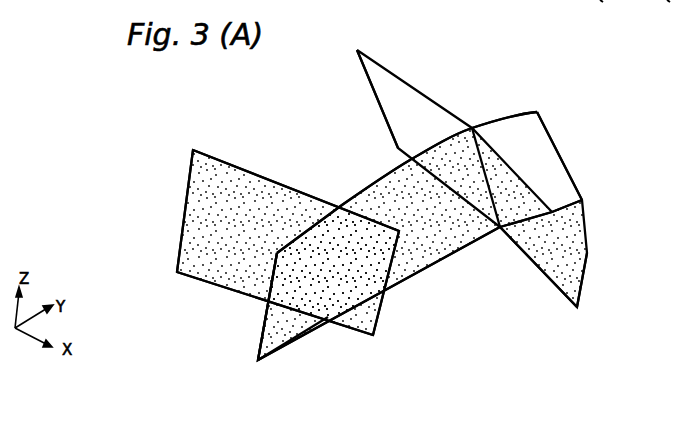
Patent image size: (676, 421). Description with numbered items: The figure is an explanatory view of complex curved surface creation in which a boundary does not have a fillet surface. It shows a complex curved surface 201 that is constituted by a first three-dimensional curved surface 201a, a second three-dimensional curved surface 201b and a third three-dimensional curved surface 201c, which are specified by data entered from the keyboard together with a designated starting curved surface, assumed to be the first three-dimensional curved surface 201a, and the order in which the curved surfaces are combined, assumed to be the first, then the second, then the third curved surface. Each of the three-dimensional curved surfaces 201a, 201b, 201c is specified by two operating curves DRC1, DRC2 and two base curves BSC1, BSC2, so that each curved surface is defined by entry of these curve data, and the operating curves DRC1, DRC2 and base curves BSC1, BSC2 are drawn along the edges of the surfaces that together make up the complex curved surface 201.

The complex curved surface 201 is at (442, 258).
The first three-dimensional curved surface 201a is at (197, 276).
The second three-dimensional curved surface 201b is at (298, 325).
The third three-dimensional curved surface 201c is at (440, 108).
The operating curve DRC1 is at (371, 83).
The operating curve DRC2 is at (562, 163).
The base curve BSC1 is at (268, 178).
The base curve BSC2 is at (478, 238).